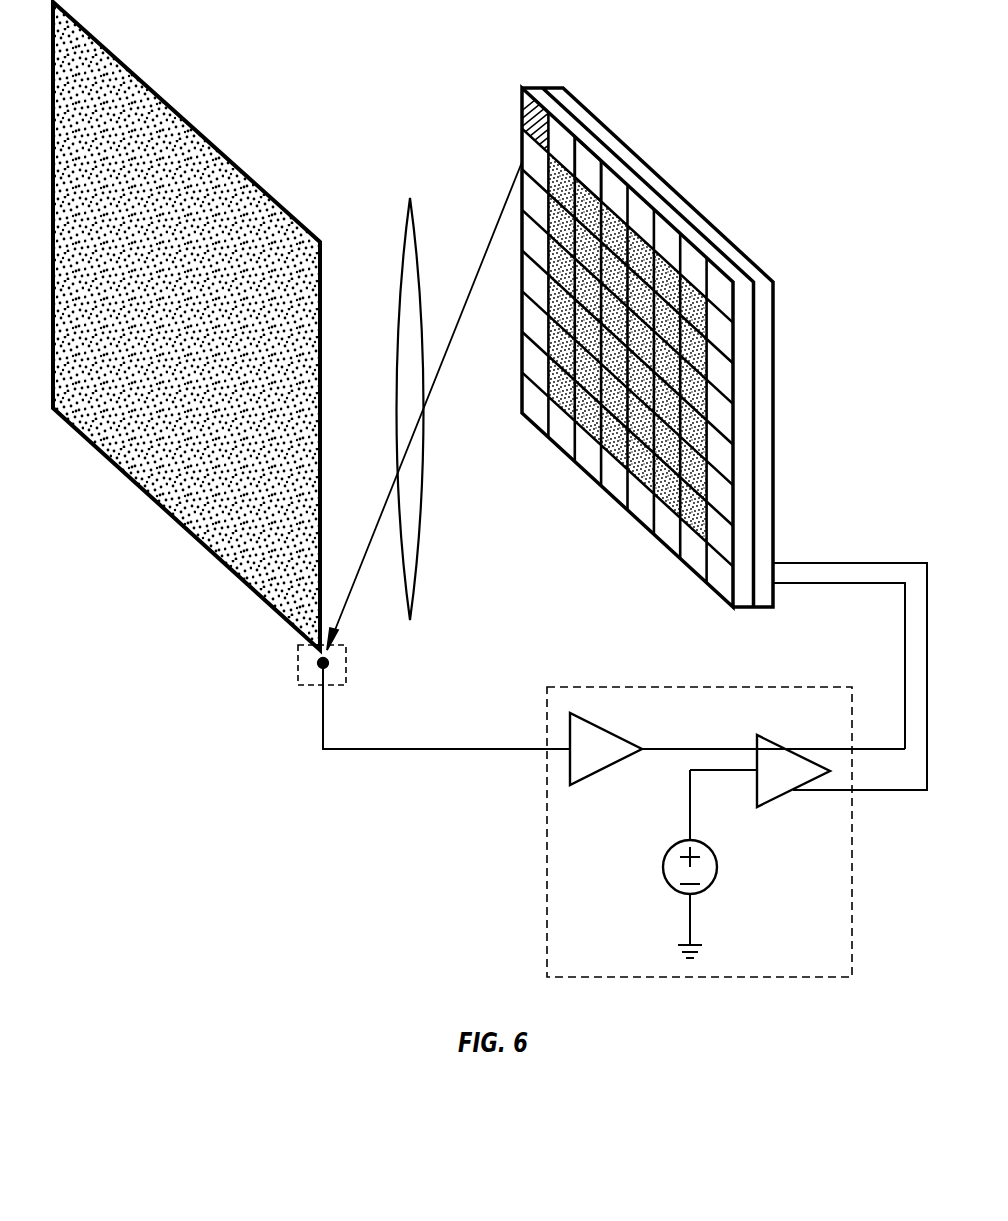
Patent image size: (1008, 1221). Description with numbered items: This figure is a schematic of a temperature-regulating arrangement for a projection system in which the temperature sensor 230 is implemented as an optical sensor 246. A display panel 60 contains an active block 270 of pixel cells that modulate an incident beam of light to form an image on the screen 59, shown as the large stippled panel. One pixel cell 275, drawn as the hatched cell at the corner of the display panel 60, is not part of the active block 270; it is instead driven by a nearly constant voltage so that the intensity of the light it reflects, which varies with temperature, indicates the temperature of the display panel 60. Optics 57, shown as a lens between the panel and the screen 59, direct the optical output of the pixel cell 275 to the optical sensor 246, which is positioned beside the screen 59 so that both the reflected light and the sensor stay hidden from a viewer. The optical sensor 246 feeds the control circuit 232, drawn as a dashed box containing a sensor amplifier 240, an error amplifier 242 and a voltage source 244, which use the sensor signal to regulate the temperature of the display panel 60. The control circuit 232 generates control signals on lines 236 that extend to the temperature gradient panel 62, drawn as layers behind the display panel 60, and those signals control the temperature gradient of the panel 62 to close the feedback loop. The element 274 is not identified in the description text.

The screen 59 is at (197, 130).
The optics 57 is at (408, 196).
The display panel 60 is at (590, 477).
The temperature gradient panel 62 is at (776, 449).
The active block 270 is at (547, 333).
The inactive detector element 274 is at (588, 172).
The pixel cell 275 is at (522, 105).
The lines 236 is at (802, 561).
The optical sensor 246 is at (320, 667).
The temperature sensor 230 is at (346, 667).
The control circuit 232 is at (547, 868).
The sensor amplifier 240 is at (607, 728).
The error amplifier 242 is at (757, 735).
The voltage source 244 is at (663, 866).